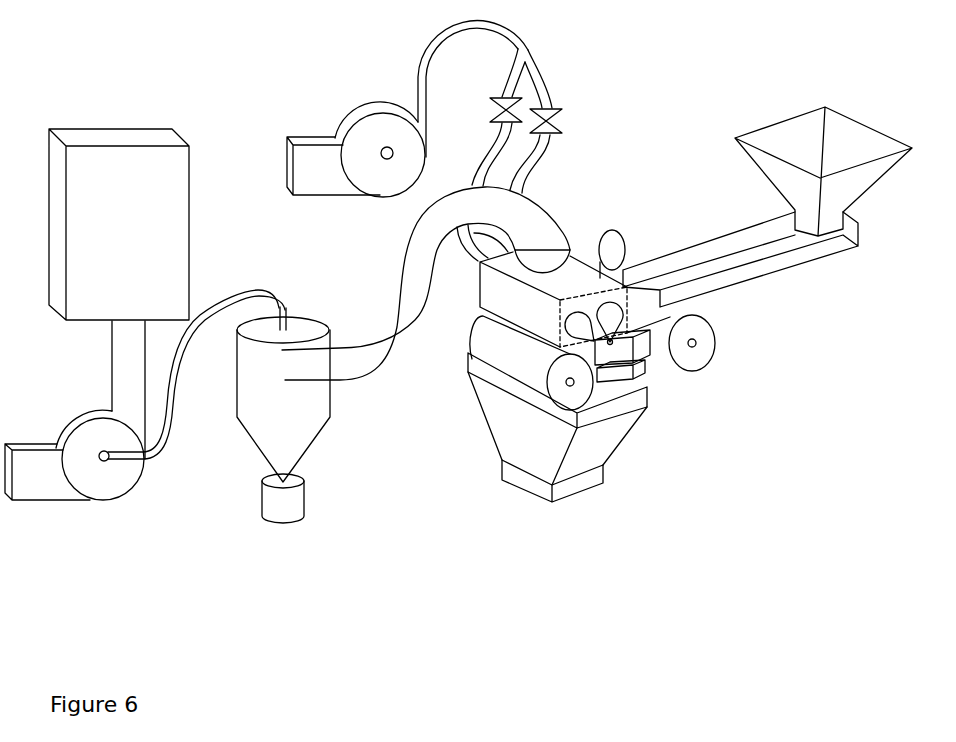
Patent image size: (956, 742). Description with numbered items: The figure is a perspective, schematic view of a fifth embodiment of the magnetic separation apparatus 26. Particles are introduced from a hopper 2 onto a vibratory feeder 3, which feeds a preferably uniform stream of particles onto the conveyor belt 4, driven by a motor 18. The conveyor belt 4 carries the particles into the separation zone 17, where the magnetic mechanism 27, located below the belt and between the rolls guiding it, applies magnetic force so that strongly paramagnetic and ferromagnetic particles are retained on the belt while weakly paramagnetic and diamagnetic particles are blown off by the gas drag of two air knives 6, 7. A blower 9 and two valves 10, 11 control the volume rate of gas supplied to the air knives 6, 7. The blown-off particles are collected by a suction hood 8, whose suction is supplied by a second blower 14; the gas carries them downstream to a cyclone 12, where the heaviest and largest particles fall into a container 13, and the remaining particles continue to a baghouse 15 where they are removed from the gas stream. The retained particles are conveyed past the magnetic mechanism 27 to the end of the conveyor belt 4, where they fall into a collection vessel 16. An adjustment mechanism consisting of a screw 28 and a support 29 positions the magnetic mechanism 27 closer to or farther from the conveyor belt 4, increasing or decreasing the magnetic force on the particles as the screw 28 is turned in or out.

The hopper 2 is at (823, 171).
The vibratory feeder 3 is at (740, 259).
The conveyor belt 4 is at (615, 317).
The air knife 6 is at (610, 322).
The air knife 7 is at (579, 326).
The suction hood 8 is at (454, 283).
The blower 9 is at (407, 109).
The valve 10 is at (528, 151).
The valve 11 is at (491, 155).
The cyclone 12 is at (219, 386).
The container 13 is at (283, 498).
The blower 14 is at (75, 410).
The baghouse 15 is at (119, 224).
The collection vessel 16 is at (557, 409).
The separation zone 17 is at (608, 343).
The motor 18 is at (612, 254).
The apparatus 26 is at (215, 108).
The magnetic mechanism 27 is at (622, 347).
The screw 28 is at (635, 350).
The support 29 is at (633, 378).